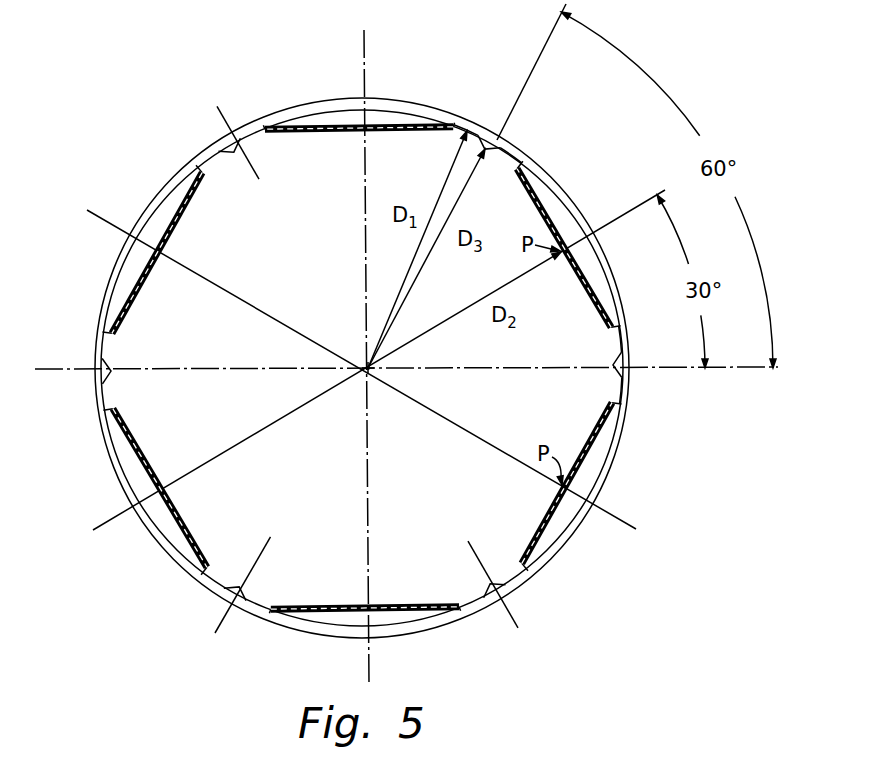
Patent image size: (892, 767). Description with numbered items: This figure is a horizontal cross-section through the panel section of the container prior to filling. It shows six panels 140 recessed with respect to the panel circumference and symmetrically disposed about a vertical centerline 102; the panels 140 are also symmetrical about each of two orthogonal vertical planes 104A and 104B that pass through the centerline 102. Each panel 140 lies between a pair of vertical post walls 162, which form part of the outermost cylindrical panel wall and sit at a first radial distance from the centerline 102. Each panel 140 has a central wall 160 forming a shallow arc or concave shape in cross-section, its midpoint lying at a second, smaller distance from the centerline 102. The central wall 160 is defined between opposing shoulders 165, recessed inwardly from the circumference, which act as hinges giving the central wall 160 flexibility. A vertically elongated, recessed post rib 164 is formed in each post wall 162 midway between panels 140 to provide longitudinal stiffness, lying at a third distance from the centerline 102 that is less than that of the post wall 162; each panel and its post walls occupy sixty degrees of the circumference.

The vertical centerline 102 is at (366, 372).
The vertical plane 104A is at (737, 371).
The vertical plane 104B is at (373, 652).
The panel 140 is at (396, 124).
The central wall 160 is at (583, 276).
The post wall 162 is at (510, 152).
The post rib 164 is at (615, 369).
The shoulder 165 is at (522, 165).